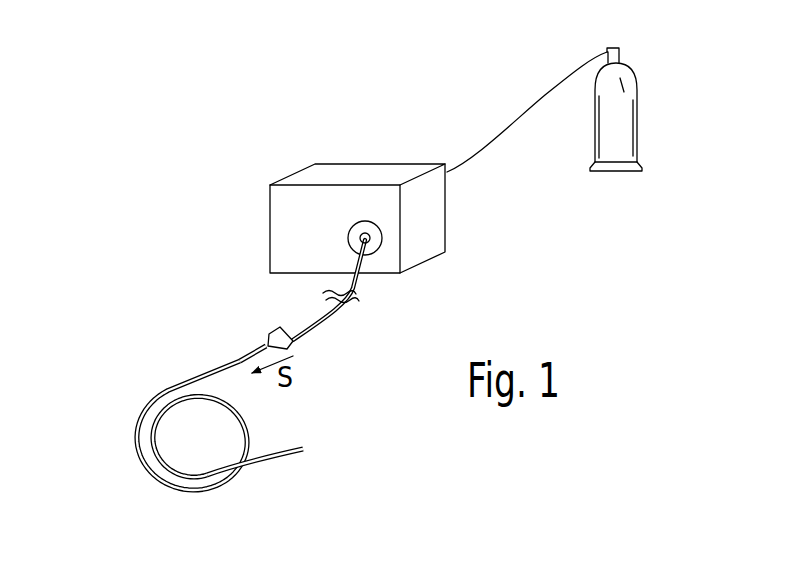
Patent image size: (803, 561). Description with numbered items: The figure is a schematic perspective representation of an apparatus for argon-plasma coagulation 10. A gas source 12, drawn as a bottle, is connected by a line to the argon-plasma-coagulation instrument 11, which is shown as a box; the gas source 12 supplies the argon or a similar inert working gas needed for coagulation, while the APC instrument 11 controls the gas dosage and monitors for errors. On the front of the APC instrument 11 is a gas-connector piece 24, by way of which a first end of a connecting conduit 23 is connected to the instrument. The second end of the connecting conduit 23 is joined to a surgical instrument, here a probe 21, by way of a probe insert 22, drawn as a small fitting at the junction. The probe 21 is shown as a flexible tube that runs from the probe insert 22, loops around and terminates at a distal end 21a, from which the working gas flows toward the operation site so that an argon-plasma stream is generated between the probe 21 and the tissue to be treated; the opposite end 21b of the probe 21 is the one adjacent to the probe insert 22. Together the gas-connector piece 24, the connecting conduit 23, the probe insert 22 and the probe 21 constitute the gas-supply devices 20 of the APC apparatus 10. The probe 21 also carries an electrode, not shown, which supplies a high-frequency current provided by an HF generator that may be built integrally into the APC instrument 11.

The apparatus for argon-plasma coagulation 10 is at (273, 118).
The argon-plasma-coagulation instrument 11 is at (397, 157).
The gas source 12 is at (633, 99).
The gas-supply devices 20 is at (330, 390).
The probe 21 is at (138, 413).
The distal end 21a is at (290, 456).
The proximal end of tube 21b is at (262, 347).
The probe insert 22 is at (280, 327).
The connecting conduit 23 is at (320, 323).
The gas-connector piece 24 is at (375, 247).